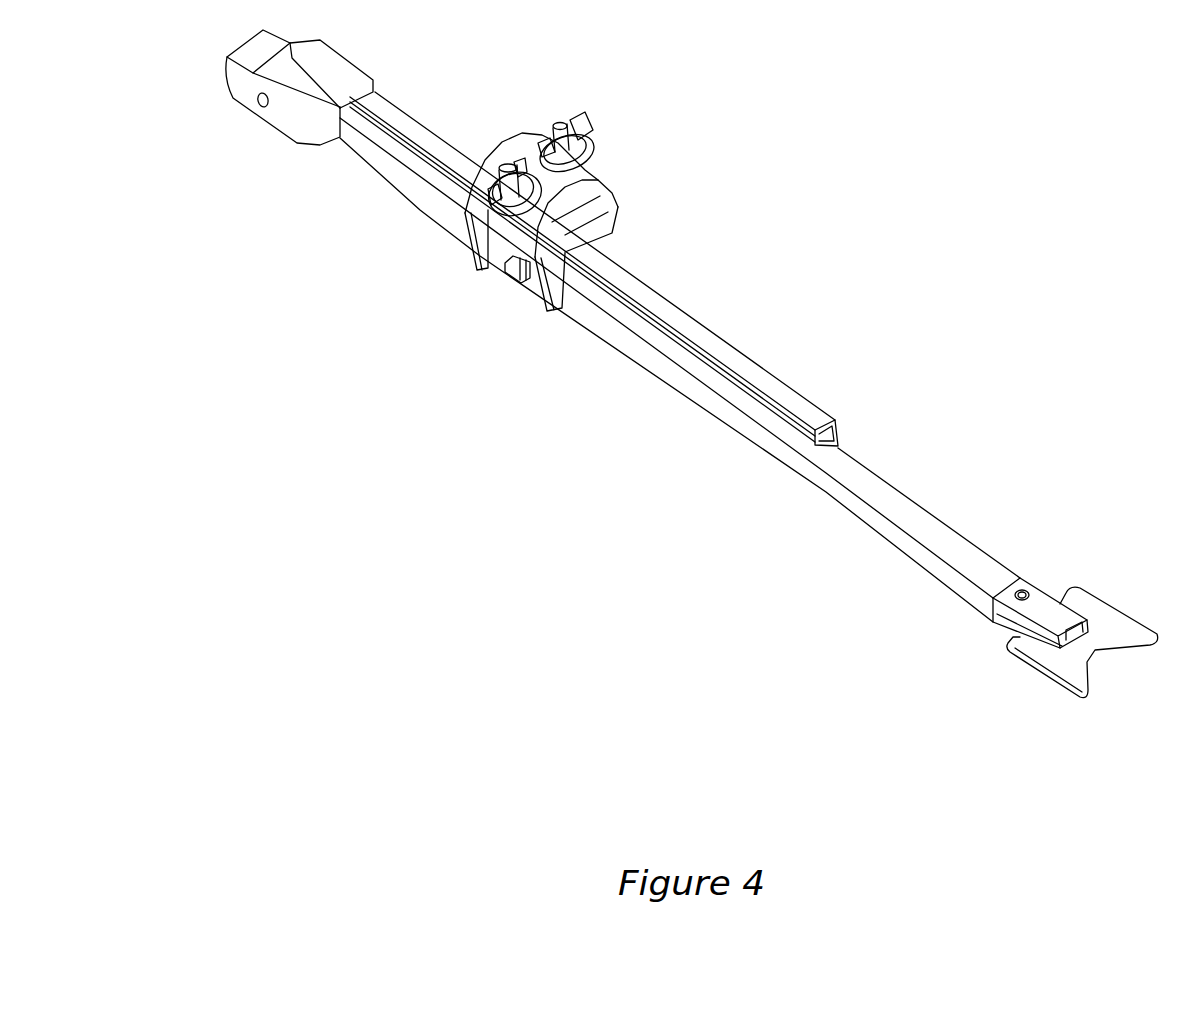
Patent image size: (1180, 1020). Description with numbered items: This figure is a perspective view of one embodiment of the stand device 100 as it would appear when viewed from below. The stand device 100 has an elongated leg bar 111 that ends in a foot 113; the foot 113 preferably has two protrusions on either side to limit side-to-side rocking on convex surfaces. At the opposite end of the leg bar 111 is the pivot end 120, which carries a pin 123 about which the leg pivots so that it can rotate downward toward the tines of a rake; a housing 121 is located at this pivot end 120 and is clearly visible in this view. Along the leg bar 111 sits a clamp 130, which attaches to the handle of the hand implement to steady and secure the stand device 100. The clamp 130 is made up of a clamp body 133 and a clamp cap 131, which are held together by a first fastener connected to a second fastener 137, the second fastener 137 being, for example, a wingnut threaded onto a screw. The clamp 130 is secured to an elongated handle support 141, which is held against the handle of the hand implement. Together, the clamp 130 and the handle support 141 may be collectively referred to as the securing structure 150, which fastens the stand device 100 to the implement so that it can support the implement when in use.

The stand device 100 is at (863, 117).
The leg bar 111 is at (897, 509).
The foot 113 is at (1062, 660).
The pivot end 120 is at (267, 96).
The housing 121 is at (350, 64).
The pin 123 is at (281, 112).
The clamp 130 is at (523, 228).
The clamp cap 131 is at (598, 174).
The clamp body 133 is at (608, 235).
The second fastener 137 is at (562, 128).
The handle support 141 is at (727, 352).
The securing structure 150 is at (624, 329).